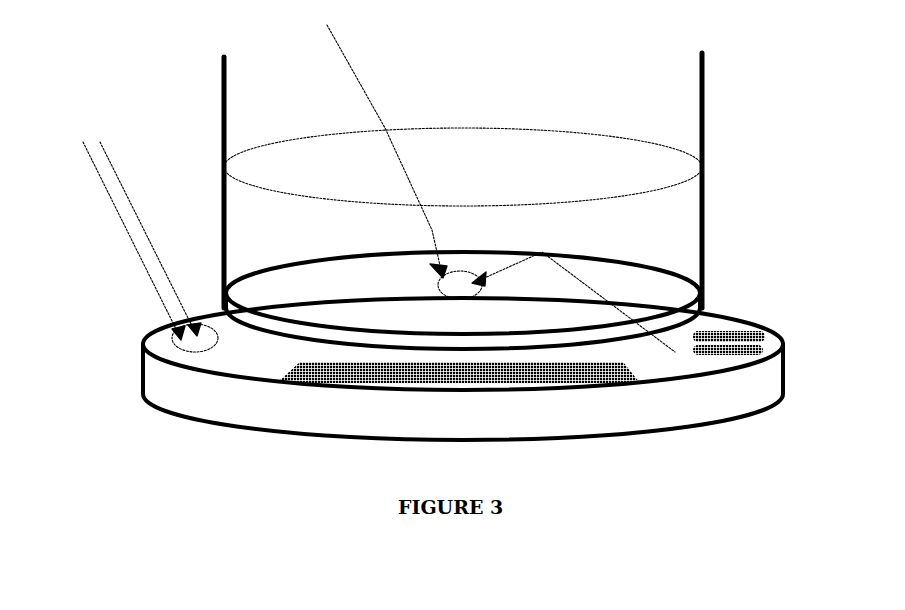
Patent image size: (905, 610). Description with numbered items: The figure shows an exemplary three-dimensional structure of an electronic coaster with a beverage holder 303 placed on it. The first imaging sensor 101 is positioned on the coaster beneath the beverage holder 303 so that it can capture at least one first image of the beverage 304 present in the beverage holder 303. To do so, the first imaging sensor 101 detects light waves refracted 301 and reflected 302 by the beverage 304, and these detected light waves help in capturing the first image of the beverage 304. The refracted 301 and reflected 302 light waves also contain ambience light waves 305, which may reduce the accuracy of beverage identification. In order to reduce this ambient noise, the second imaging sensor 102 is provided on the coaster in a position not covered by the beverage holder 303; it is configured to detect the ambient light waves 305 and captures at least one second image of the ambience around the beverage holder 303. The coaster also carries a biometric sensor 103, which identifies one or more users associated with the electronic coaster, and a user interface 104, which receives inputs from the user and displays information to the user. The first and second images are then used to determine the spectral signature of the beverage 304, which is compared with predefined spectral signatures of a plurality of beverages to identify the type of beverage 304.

The first imaging sensor 101 is at (437, 300).
The second imaging sensor 102 is at (190, 358).
The biometric sensor 103 is at (773, 320).
The user interface 104 is at (637, 370).
The refracted light waves 301 is at (415, 183).
The reflected light waves 302 is at (515, 278).
The beverage holder 303 is at (702, 53).
The beverage 304 is at (692, 148).
The ambience light waves 305 is at (133, 258).